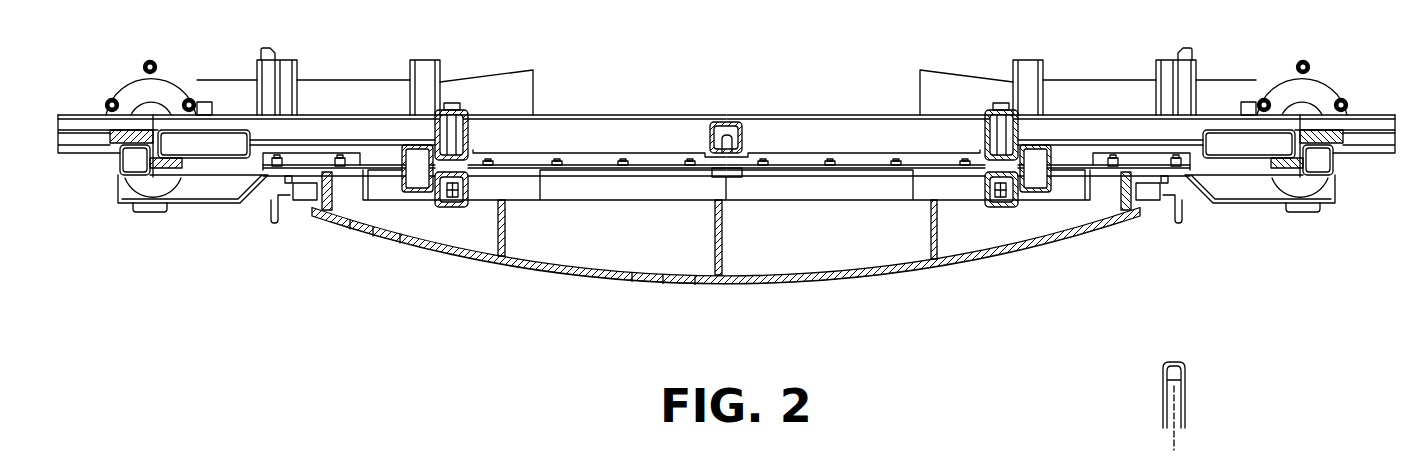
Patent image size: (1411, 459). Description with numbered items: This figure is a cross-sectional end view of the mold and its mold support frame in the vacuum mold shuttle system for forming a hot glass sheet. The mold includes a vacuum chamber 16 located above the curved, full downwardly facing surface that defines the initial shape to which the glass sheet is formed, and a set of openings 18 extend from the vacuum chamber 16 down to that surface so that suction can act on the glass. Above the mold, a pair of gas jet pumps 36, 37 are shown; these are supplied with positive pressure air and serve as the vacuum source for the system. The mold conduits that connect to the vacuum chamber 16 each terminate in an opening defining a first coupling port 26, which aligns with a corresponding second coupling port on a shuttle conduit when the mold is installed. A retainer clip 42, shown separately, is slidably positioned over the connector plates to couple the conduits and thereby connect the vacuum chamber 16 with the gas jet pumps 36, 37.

The vacuum chamber 16 is at (643, 228).
The openings 18 is at (401, 236).
The first coupling port 26 is at (1247, 145).
The gas jet pump 36 is at (1100, 97).
The gas jet pump 37 is at (355, 97).
The retainer clip 42 is at (1163, 399).